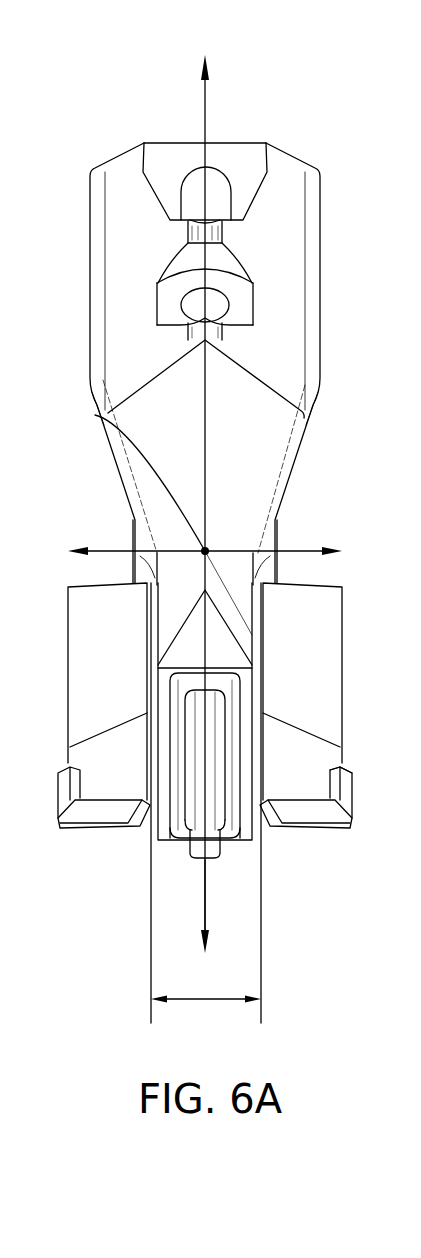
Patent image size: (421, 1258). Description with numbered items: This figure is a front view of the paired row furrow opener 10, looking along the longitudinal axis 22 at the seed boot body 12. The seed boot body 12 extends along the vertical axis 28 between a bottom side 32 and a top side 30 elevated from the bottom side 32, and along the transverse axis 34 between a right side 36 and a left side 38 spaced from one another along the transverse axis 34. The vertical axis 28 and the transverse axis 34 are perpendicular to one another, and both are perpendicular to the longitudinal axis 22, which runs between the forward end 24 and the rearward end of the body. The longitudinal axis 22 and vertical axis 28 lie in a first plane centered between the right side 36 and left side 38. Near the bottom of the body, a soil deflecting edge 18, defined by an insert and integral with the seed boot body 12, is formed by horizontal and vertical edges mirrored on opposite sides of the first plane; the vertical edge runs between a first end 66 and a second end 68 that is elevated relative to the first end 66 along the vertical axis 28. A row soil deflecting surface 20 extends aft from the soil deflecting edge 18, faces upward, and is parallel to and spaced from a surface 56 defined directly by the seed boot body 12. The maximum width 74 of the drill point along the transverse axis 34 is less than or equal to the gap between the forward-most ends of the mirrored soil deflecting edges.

The paired row furrow opener 10 is at (112, 110).
The seed boot body 12 is at (250, 108).
The top side 30 is at (170, 98).
The vertical axis 28 is at (205, 888).
The transverse axis 34 is at (100, 550).
The longitudinal axis 22 is at (97, 415).
The left side 38 is at (82, 401).
The right side 36 is at (325, 412).
The surface defined directly by the seed boot body 56 is at (312, 752).
The forward end 24 is at (132, 970).
The bottom side 32 is at (232, 1015).
The maximum width 74 is at (206, 997).
The soil deflecting edge 18 is at (318, 822).
The row soil deflecting surface 20 is at (292, 808).
The first end of the second soil deflecting edge 66 is at (353, 820).
The second end of the second soil deflecting edge 68 is at (352, 780).